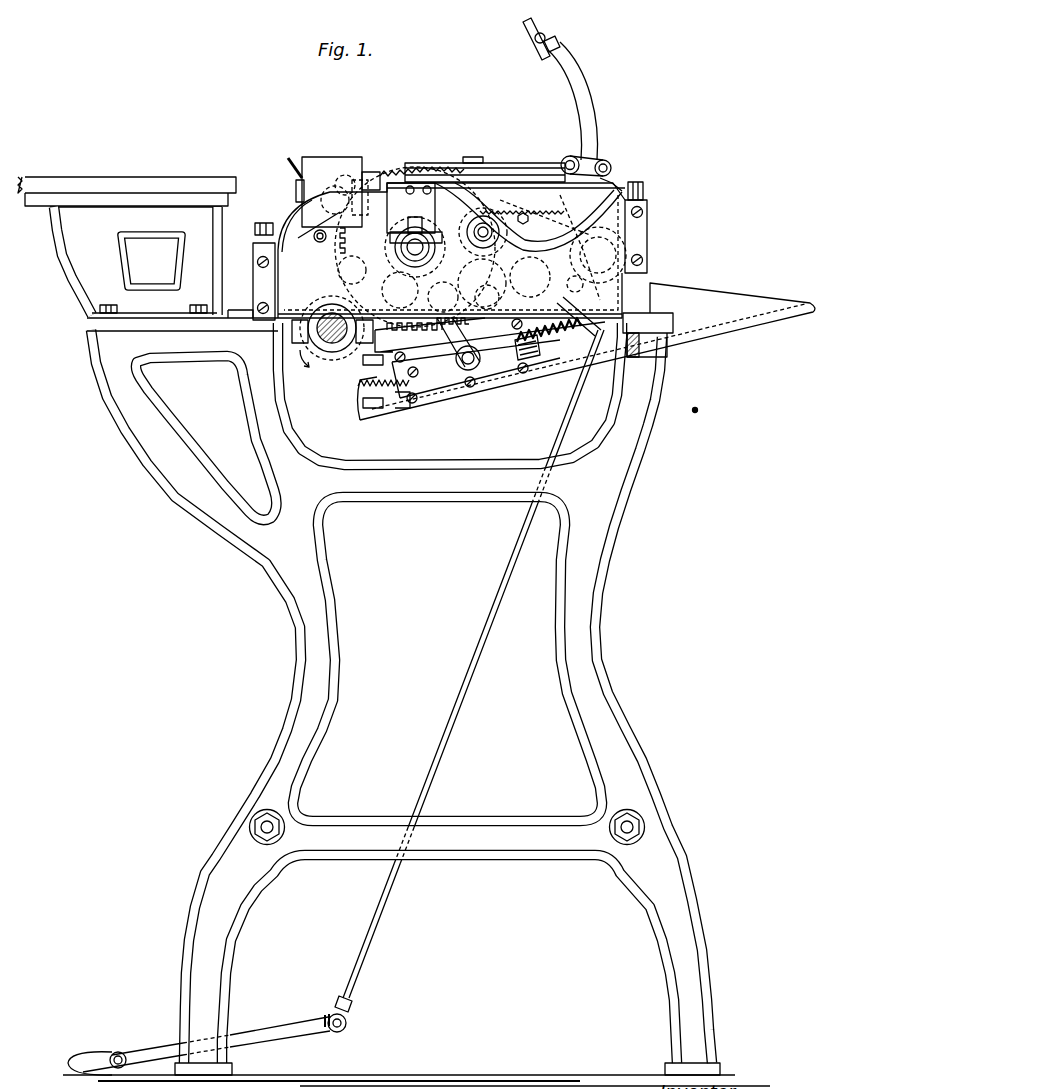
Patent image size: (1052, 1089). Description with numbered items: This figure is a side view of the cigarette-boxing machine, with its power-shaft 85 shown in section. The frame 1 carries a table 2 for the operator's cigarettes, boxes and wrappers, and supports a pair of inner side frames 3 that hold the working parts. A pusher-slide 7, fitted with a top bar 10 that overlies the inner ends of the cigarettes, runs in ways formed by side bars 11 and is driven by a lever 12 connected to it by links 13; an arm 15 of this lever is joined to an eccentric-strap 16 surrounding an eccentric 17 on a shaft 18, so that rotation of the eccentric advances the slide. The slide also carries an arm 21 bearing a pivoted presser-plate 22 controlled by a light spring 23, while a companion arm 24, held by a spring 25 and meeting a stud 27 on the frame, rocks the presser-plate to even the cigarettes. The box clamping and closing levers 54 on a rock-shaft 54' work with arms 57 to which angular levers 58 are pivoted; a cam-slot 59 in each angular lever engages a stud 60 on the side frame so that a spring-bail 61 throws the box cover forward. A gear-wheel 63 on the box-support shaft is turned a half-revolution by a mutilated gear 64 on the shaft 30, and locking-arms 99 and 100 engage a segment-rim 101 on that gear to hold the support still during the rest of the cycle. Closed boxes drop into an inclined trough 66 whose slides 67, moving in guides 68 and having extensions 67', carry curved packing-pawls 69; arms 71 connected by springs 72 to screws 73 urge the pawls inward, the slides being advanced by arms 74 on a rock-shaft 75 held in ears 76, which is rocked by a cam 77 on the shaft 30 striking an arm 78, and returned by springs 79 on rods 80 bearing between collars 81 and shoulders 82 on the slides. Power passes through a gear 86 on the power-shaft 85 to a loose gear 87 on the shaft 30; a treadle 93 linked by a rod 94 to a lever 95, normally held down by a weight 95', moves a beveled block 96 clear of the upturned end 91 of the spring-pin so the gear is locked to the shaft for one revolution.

The frame 1 is at (416, 698).
The table 2 is at (122, 184).
The inner side frames 3 is at (647, 214).
The pusher-slide 7 is at (511, 164).
The top bar 10 is at (484, 159).
The side bars 11 is at (532, 172).
The lever 12 is at (619, 185).
The links 13 is at (586, 161).
The arm 15 is at (576, 270).
The eccentric-strap 16 is at (574, 235).
The eccentric 17 is at (501, 291).
The shaft 18 is at (483, 258).
The arm 21 is at (598, 104).
The presser-plate 22 is at (529, 42).
The light spring 23 is at (547, 34).
The arm 24 is at (556, 214).
The spring 25 is at (528, 206).
The stud 27 is at (558, 219).
The shaft 30 is at (424, 254).
The box clamping and closing levers 54 is at (280, 189).
The rock-shaft 54' is at (299, 243).
The arms 57 is at (300, 212).
The angular levers 58 is at (323, 176).
The cam-slot 59 is at (312, 229).
The studs 60 is at (332, 190).
The spring-bail 61 is at (300, 176).
The gear-wheel 63 is at (375, 180).
The mutilated gear 64 is at (430, 200).
The trough 66 is at (415, 438).
The slides 67 is at (490, 339).
The extensions 67' is at (434, 376).
The guides 68 is at (509, 327).
The packing-pawls 69 is at (361, 373).
The arms 71 is at (366, 395).
The springs 72 is at (412, 380).
The screws 73 is at (416, 377).
The arms 74 is at (450, 341).
The rock-shaft 75 is at (489, 299).
The ears 76 is at (426, 336).
The cam 77 is at (373, 287).
The arm 78 is at (405, 337).
The springs 79 is at (560, 346).
The rods 80 is at (637, 335).
The collars 81 is at (563, 325).
The shoulders 82 is at (537, 363).
The power-shaft 85 is at (328, 337).
The gear 86 is at (318, 297).
The loose gear 87 is at (344, 279).
The upturned end 91 is at (393, 222).
The treadle 93 is at (292, 1018).
The rod 94 is at (456, 726).
The lever 95 is at (522, 241).
The weight 95' is at (337, 163).
The block 96 is at (422, 220).
The locking-arm 99 is at (358, 178).
The locking-arm 100 is at (393, 243).
The segment-rim 101 is at (409, 297).